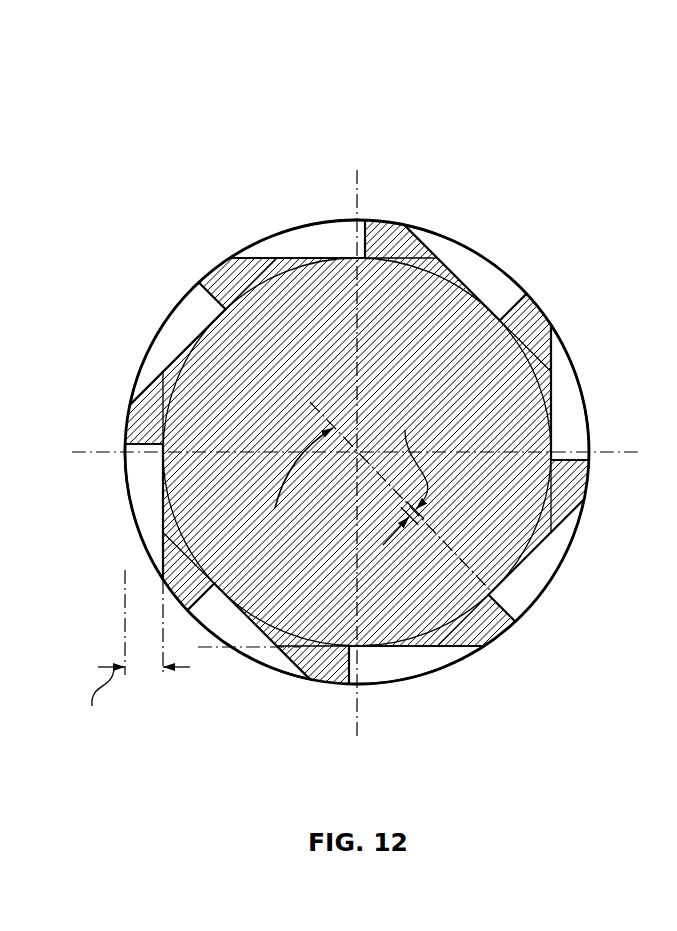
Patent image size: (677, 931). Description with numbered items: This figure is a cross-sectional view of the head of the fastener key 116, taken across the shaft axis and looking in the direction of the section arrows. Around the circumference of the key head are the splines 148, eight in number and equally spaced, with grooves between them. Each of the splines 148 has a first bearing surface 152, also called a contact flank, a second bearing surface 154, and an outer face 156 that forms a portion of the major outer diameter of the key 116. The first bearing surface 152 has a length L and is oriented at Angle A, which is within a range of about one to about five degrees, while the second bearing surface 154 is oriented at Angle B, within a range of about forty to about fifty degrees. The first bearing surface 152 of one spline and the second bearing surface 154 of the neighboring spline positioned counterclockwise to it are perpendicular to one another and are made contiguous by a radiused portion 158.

The key 116 is at (195, 132).
The splines 148 is at (462, 635).
The first bearing surface 152 is at (500, 603).
The second bearing surface 154 is at (438, 650).
The outer face 156 is at (505, 631).
The radiused portion 158 is at (225, 308).